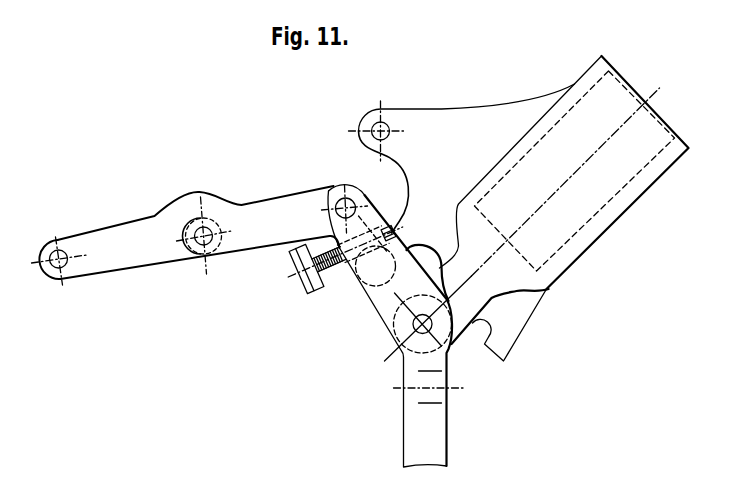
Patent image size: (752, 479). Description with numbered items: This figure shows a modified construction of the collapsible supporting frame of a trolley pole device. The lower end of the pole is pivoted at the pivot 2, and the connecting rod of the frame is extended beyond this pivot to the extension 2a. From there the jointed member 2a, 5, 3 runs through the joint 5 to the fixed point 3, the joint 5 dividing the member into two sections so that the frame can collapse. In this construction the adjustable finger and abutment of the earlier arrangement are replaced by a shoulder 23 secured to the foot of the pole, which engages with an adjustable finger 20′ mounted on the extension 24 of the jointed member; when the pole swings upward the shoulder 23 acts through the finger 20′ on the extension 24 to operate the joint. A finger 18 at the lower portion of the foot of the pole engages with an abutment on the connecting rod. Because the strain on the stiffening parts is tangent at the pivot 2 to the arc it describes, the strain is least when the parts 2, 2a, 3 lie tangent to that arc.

The pivot 2 is at (450, 346).
The extension of the connecting rod 2a is at (341, 197).
The frame point 3 is at (52, 270).
The joint 5 is at (202, 256).
The finger 18 is at (511, 345).
The adjustable finger 20′ is at (329, 280).
The shoulder 23 is at (393, 233).
The extension of the jointed member 24 is at (372, 309).